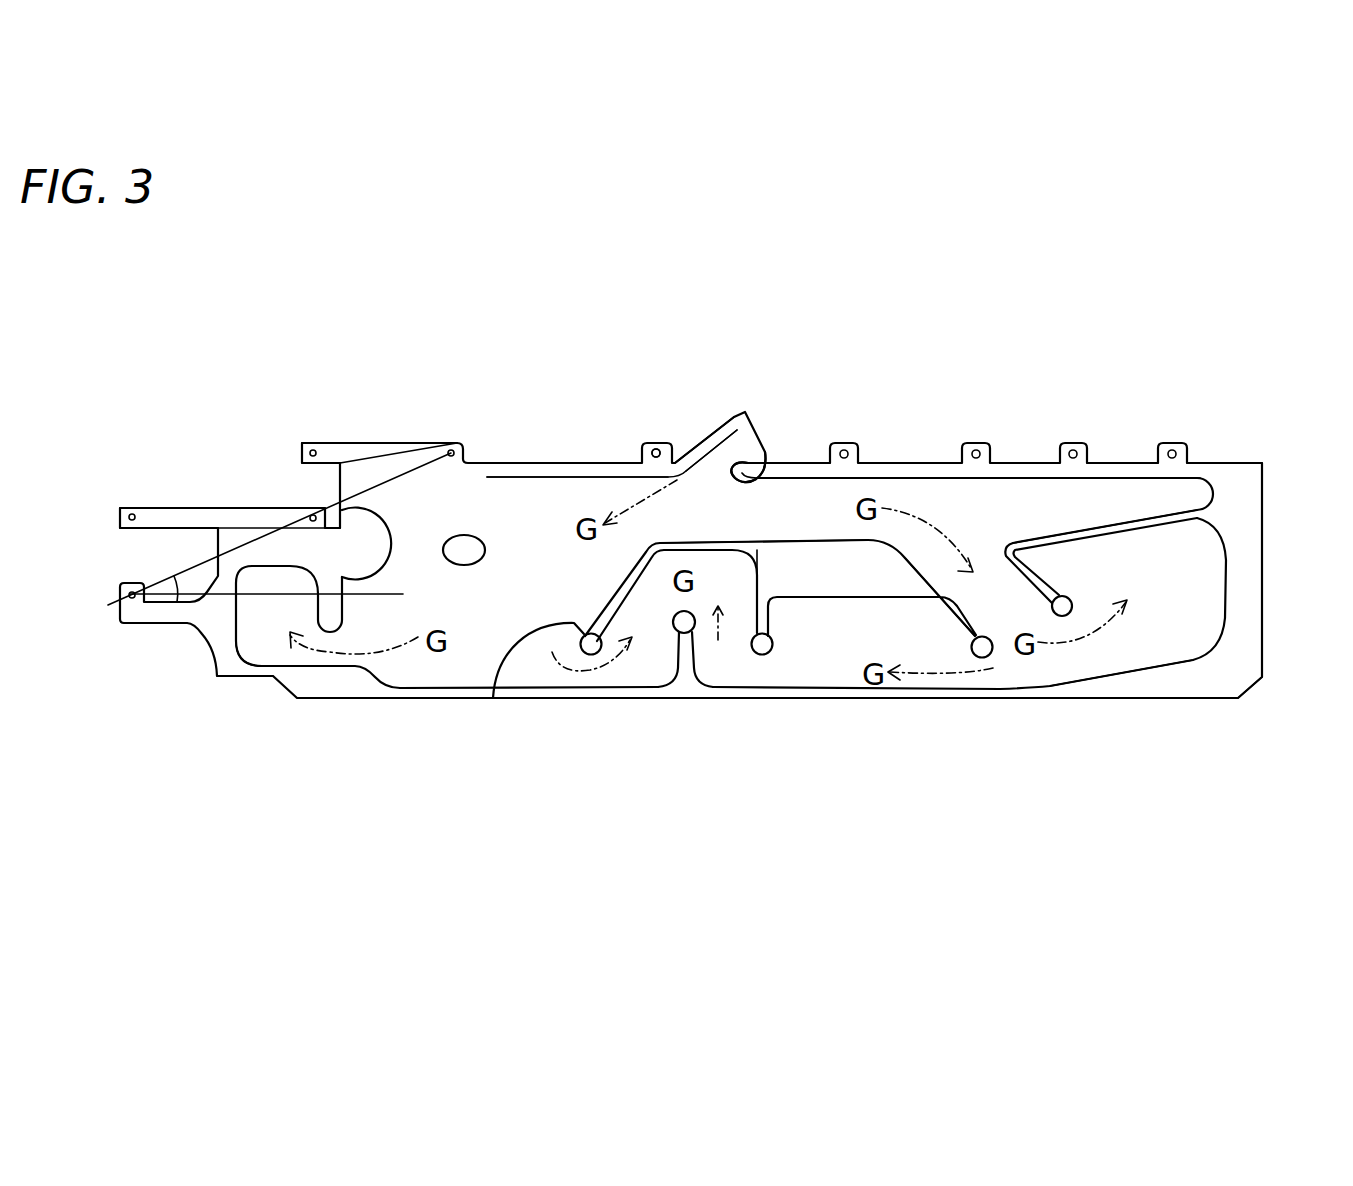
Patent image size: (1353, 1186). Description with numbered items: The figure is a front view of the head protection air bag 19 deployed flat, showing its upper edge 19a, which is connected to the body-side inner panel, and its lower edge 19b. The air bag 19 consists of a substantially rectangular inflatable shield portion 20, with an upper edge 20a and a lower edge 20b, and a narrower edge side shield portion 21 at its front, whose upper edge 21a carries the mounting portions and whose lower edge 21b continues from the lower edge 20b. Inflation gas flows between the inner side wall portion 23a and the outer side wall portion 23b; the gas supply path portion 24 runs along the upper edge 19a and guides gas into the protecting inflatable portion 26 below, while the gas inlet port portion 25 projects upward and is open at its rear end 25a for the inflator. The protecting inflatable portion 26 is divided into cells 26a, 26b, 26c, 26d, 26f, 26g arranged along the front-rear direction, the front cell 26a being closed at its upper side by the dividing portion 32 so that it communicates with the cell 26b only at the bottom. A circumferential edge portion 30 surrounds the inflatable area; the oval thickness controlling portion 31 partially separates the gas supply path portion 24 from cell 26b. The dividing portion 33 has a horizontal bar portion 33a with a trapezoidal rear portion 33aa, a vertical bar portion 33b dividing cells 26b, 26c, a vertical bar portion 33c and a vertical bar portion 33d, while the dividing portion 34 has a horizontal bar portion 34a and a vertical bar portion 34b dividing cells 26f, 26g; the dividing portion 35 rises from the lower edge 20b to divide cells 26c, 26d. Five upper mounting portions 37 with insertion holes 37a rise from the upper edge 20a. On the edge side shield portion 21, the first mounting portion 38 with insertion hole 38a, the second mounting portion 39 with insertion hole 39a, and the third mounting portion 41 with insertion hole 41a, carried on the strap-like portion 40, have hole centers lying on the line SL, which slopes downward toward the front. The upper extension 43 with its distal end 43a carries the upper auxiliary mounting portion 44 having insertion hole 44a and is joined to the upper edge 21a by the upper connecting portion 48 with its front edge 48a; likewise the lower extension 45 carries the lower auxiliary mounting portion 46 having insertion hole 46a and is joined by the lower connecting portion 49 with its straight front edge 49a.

The air bag 19 is at (1189, 268).
The upper edge 19a is at (1238, 470).
The lower edge 19b is at (1188, 695).
The inflatable shield portion 20 is at (1262, 860).
The upper edge 20a is at (800, 467).
The lower edge 20b is at (843, 700).
The edge side shield portion 21 is at (460, 860).
The upper edge 21a is at (243, 517).
The lower edge 21b is at (238, 666).
The inner side wall portion 23a is at (1117, 497).
The outer side wall portion 23b is at (1173, 493).
The gas supply path portion 24 is at (898, 500).
The gas inlet port portion 25 is at (706, 455).
The rear end 25a is at (745, 430).
The protecting inflatable portion 26 is at (530, 700).
The cell 26a is at (250, 622).
The cell 26b is at (540, 497).
The cell 26c is at (652, 635).
The cell 26d is at (707, 635).
The cell 26f is at (998, 607).
The cell 26g is at (1157, 652).
The circumferential edge portion 30 is at (1250, 548).
The thickness controlling portion 31 is at (468, 536).
The dividing portion 32 is at (345, 617).
The dividing portion 33 is at (764, 518).
The horizontal bar portion 33a is at (697, 540).
The rear portion 33aa is at (832, 548).
The vertical bar portion 33b is at (531, 682).
The vertical bar portion 33c is at (981, 658).
The vertical bar portion 33d is at (762, 656).
The dividing portion 34 is at (1079, 514).
The horizontal bar portion 34a is at (1157, 525).
The vertical bar portion 34b is at (1058, 597).
The dividing portion 35 is at (686, 630).
The upper mounting portion 37 is at (643, 447).
The insertion hole 37a is at (656, 449).
The first mounting portion 38 is at (452, 450).
The insertion hole 38a is at (451, 457).
The second mounting portion 39 is at (290, 516).
The insertion hole 39a is at (313, 513).
The strap-like portion 40 is at (149, 610).
The third mounting portion 41 is at (127, 602).
The insertion hole 41a is at (130, 592).
The upper extension 43 is at (394, 430).
The distal end 43a is at (364, 470).
The upper auxiliary mounting portion 44 is at (320, 448).
The insertion hole 44a is at (313, 449).
The lower extension 45 is at (177, 489).
The lower auxiliary mounting portion 46 is at (132, 507).
The insertion hole 46a is at (118, 508).
The upper connecting portion 48 is at (346, 455).
The front edge 48a is at (380, 532).
The lower connecting portion 49 is at (253, 563).
The front edge 49a is at (236, 572).
The line SL is at (420, 445).